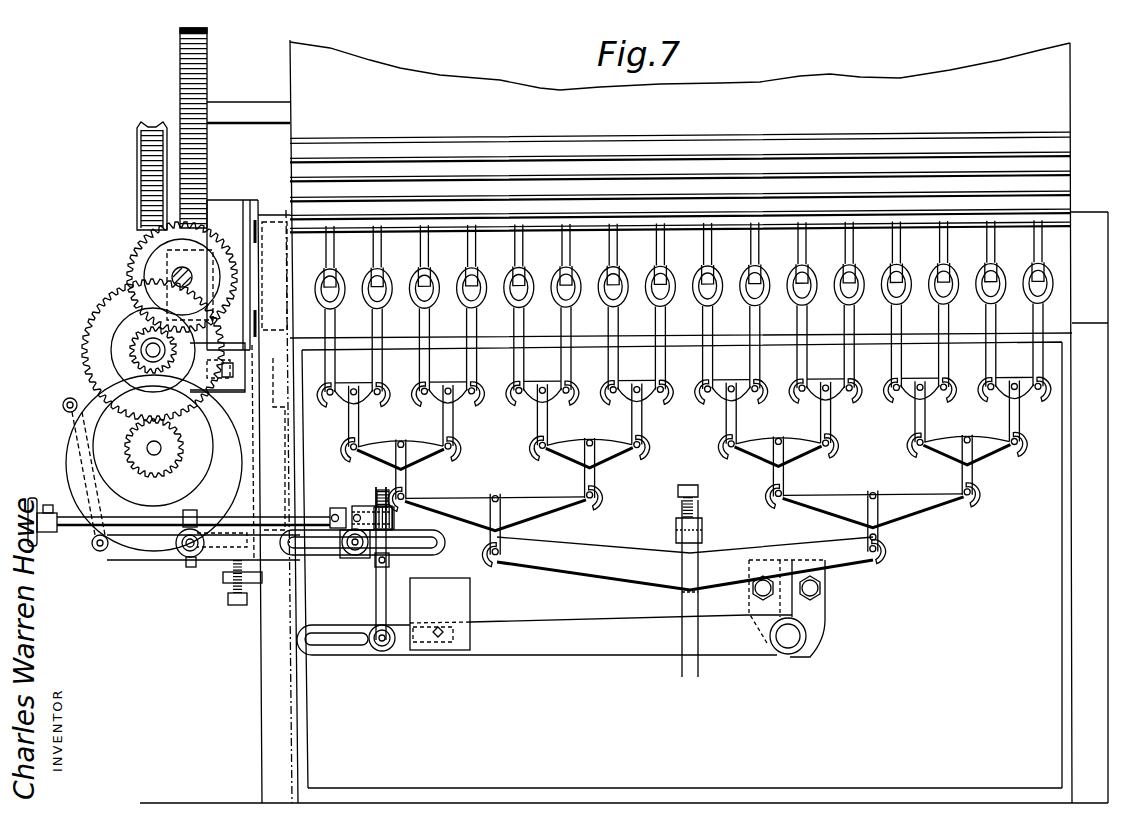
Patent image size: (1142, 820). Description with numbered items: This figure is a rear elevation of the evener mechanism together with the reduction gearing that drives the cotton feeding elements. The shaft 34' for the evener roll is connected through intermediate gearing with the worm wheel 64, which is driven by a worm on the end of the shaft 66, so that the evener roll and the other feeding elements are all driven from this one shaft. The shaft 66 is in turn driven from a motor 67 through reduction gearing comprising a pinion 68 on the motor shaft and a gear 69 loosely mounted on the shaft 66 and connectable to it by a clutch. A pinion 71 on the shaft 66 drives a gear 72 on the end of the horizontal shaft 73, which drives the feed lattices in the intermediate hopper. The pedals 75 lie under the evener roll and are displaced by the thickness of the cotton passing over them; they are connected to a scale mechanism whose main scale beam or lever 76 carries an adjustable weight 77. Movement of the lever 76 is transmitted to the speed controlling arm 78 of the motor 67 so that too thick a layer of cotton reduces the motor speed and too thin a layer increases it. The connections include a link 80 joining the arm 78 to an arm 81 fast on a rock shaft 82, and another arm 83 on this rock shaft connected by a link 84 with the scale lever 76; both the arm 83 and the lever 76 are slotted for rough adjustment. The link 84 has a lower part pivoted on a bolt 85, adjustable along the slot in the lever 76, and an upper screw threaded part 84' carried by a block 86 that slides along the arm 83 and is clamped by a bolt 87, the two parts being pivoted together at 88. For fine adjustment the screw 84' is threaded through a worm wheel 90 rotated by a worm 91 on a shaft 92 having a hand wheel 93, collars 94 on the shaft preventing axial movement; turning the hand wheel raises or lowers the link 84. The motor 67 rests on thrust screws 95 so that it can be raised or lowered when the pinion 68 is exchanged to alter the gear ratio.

The shaft 34' is at (248, 93).
The worm wheel 64 is at (150, 120).
The shaft 66 is at (147, 347).
The motor 67 is at (68, 452).
The pinion 68 is at (152, 470).
The gear 69 is at (102, 322).
The pinion 71 is at (133, 360).
The gear 72 is at (128, 262).
The horizontal shaft 73 is at (192, 278).
The pedals 75 is at (375, 245).
The main scale beam or lever 76 is at (548, 648).
The adjustable weight 77 is at (458, 598).
The speed controlling arm 78 is at (66, 410).
The link 80 is at (95, 528).
The arm 81 is at (155, 548).
The rock shaft 82 is at (183, 562).
The arm 83 is at (217, 556).
The link 84 is at (358, 563).
The screw threaded part 84' is at (416, 488).
The bolt 85 is at (385, 652).
The block 86 is at (330, 530).
The bolt 87 is at (355, 556).
The pivot 88 is at (392, 565).
The worm wheel 90 is at (400, 517).
The worm 91 is at (378, 500).
The shaft 92 is at (128, 522).
The hand wheel 93 is at (30, 503).
The collars 94 is at (358, 508).
The thrust screws 95 is at (237, 606).